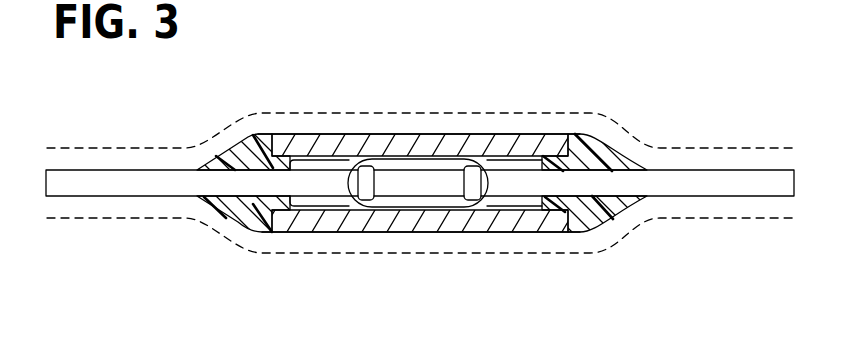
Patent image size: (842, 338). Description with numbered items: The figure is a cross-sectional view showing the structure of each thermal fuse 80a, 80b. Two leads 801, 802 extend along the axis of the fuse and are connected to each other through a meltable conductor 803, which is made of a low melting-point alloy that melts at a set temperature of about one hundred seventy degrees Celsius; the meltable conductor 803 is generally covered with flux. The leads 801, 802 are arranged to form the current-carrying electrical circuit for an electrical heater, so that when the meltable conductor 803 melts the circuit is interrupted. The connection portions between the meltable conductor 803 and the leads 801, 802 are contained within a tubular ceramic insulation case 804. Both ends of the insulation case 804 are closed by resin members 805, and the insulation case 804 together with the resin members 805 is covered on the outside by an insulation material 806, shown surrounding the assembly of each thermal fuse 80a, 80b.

The lead 801 is at (93, 180).
The lead 802 is at (733, 185).
The meltable conductor 803 is at (402, 180).
The insulation case 804 is at (516, 145).
The resin member 805 is at (603, 218).
The insulation material 806 is at (313, 112).
The thermal fuse 80a is at (420, 261).
The thermal fuse 80b is at (692, 226).